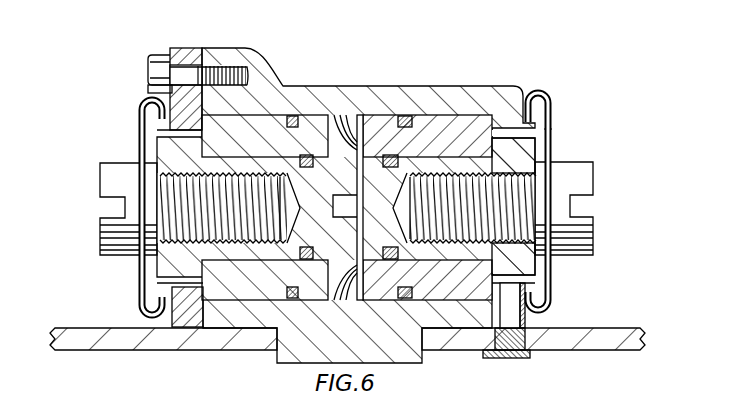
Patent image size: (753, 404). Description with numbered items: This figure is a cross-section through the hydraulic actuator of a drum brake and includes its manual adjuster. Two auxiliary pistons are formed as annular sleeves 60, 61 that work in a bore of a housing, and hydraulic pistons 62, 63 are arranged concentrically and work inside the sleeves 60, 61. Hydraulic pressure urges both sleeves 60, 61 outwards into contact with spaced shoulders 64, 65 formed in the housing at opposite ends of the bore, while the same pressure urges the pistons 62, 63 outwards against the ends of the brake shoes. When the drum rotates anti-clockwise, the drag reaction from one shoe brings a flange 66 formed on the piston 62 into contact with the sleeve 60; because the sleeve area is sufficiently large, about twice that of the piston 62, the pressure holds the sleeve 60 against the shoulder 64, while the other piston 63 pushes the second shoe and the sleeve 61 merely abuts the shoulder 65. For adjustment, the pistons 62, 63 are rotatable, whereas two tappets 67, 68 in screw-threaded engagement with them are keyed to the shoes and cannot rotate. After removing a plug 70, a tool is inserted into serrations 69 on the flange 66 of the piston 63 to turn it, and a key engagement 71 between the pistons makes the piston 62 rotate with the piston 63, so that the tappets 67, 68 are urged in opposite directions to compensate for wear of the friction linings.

The annular sleeve 60 is at (260, 143).
The annular sleeve 61 is at (467, 138).
The hydraulic piston 62 is at (328, 180).
The hydraulic piston 63 is at (425, 163).
The shoulder 64 is at (183, 48).
The shoulder 65 is at (515, 132).
The flange 66 is at (522, 158).
The tappet 67 is at (132, 237).
The tappet 68 is at (575, 230).
The serrations 69 is at (514, 116).
The plug 70 is at (521, 358).
The key engagement 71 is at (346, 226).